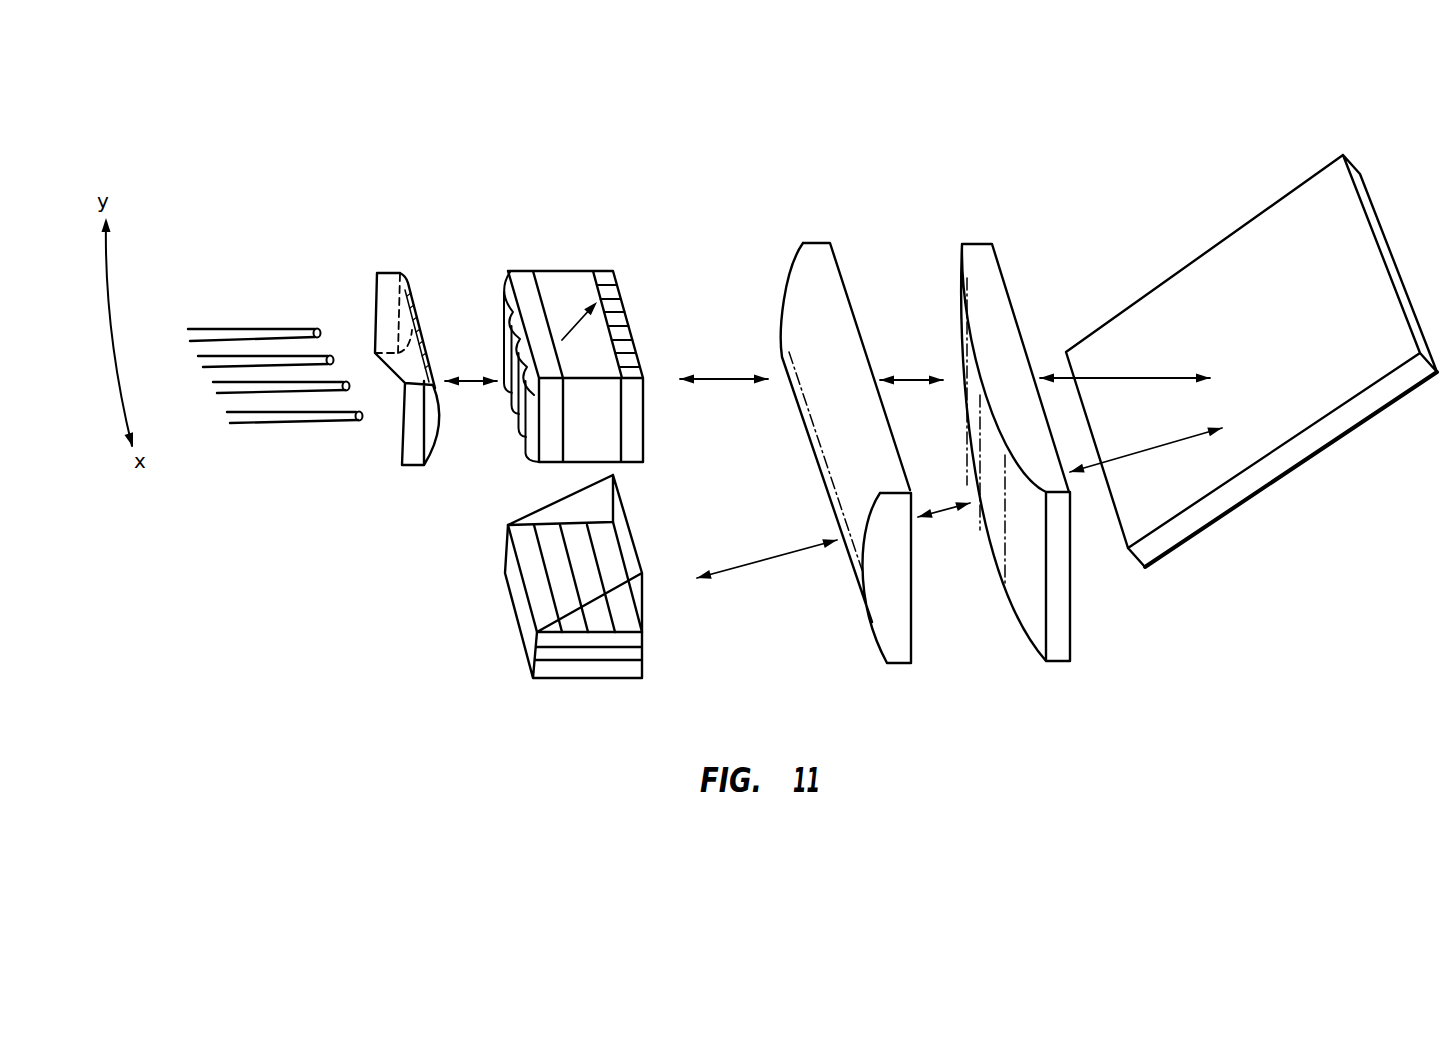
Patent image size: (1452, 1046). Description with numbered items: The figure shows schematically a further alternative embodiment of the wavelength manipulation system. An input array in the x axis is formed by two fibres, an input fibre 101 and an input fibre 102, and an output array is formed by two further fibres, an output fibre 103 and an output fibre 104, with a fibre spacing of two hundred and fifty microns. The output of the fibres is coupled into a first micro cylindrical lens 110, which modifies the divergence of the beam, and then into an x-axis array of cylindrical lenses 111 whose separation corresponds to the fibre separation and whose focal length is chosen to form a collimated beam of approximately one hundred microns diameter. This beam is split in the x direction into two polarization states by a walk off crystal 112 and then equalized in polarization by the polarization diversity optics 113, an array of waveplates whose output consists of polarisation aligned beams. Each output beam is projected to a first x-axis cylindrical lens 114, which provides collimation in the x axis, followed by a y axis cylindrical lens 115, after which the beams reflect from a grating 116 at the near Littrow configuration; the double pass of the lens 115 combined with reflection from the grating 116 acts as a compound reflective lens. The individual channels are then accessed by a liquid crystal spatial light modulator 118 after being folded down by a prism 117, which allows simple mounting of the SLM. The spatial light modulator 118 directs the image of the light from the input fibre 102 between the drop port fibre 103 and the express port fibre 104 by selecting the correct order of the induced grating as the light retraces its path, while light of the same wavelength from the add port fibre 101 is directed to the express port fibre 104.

The input fibre 101 is at (290, 327).
The input fibre 102 is at (328, 356).
The output fibre 103 is at (223, 396).
The output fibre 104 is at (285, 425).
The first micro cylindrical lens 110 is at (403, 466).
The x-axis array of cylindrical lenses 111 is at (494, 286).
The walk off crystal 112 is at (560, 270).
The polarization diversity optics 113 is at (618, 282).
The first x-axis cylindrical lens 114 is at (820, 242).
The y axis cylindrical lens 115 is at (980, 243).
The grating 116 is at (1217, 519).
The prism 117 is at (643, 600).
The liquid crystal spatial light modulator 118 is at (643, 667).